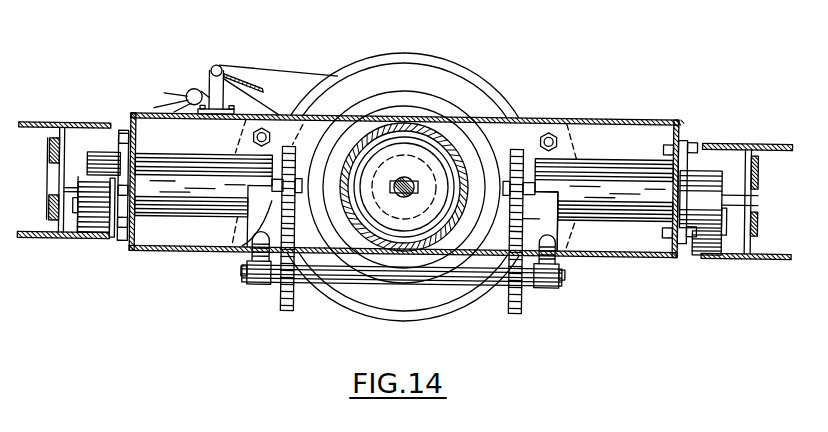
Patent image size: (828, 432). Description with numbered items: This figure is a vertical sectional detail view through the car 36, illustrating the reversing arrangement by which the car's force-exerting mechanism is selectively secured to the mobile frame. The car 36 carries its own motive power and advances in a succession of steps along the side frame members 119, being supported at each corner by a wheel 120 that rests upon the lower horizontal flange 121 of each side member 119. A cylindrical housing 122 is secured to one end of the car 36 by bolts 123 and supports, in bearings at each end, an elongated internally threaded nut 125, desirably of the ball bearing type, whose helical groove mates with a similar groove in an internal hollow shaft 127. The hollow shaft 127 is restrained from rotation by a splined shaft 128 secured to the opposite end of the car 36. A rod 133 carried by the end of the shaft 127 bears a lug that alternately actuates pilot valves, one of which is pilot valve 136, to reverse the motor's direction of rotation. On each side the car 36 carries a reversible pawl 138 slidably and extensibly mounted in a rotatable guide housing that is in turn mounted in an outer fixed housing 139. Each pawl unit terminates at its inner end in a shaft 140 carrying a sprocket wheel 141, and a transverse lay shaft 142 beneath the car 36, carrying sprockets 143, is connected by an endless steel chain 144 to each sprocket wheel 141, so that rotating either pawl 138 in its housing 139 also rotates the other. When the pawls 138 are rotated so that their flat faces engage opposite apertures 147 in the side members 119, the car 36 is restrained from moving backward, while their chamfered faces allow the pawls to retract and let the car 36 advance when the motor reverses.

The car 36 is at (640, 117).
The side frame members 119 is at (56, 243).
The wheel 120 is at (108, 245).
The lower horizontal flange 121 is at (62, 132).
The cylindrical housing 122 is at (412, 90).
The bolts 123 is at (267, 131).
The elongated internally threaded nut 125 is at (358, 150).
The internal hollow shaft 127 is at (430, 150).
The splined shaft 128 is at (402, 180).
The rod 133 is at (213, 68).
The pilot valve 136 is at (189, 94).
The reversible pawl 138 is at (76, 172).
The outer fixed housing 139 is at (167, 157).
The shaft 140 is at (240, 239).
The sprocket wheel 141 is at (516, 148).
The transverse lay shaft 142 is at (448, 285).
The sprockets 143 is at (521, 310).
The endless steel chain 144 is at (523, 217).
The apertures 147 is at (56, 202).